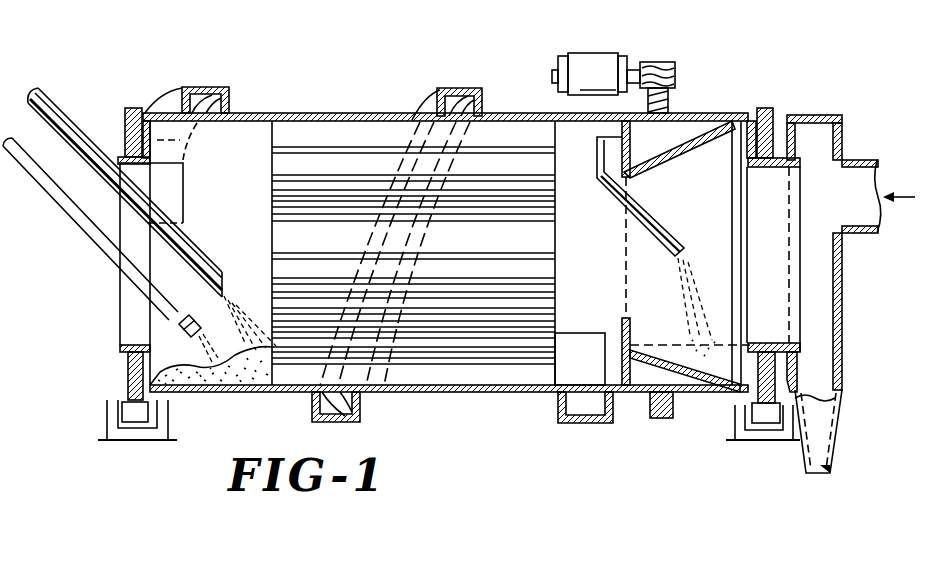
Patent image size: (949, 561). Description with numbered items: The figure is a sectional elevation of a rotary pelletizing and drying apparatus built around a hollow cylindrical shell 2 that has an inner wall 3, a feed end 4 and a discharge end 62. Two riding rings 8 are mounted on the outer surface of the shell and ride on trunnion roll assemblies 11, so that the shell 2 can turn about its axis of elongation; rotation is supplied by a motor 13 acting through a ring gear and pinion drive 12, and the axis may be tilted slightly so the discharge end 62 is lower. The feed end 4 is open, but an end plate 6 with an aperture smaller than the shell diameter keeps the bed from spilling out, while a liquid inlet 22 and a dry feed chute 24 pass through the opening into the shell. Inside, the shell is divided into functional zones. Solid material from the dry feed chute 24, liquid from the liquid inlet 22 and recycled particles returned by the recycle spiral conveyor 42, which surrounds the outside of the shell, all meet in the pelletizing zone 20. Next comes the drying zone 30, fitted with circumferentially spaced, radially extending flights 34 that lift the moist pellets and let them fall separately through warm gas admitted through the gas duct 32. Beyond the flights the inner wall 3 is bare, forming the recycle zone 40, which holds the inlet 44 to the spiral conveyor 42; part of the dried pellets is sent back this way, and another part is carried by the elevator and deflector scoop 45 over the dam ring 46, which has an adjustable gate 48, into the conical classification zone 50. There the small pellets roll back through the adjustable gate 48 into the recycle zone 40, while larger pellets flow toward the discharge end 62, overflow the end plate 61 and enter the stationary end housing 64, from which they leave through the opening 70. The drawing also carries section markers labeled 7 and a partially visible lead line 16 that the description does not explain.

The hollow cylindrical shell 2 is at (244, 106).
The inner wall 3 is at (357, 132).
The feed end 4 is at (122, 306).
The end plate 6 is at (150, 365).
The section line 7 is at (93, 560).
The riding rings 8 is at (133, 108).
The trunnion roll assemblies 11 is at (108, 426).
The ring gear and pinion drive 12 is at (674, 72).
The motor 13 is at (602, 56).
The supply line 16 is at (9, 248).
The pelletizing zone 20 is at (235, 212).
The liquid inlet 22 is at (50, 187).
The dry feed chute 24 is at (67, 120).
The drying zone 30 is at (492, 252).
The gas duct 32 is at (856, 160).
The radially extending flights 34 is at (473, 356).
The recycle zone 40 is at (596, 252).
The recycle spiral conveyor 42 is at (200, 88).
The inlet 44 is at (582, 424).
The elevator and deflector scoop 45 is at (651, 232).
The dam ring 46 is at (628, 394).
The adjustable gate 48 is at (632, 327).
The classification zone 50 is at (709, 202).
The end plate 61 is at (736, 382).
The discharge end 62 is at (803, 316).
The stationary end housing 64 is at (843, 370).
The opening 70 is at (808, 458).